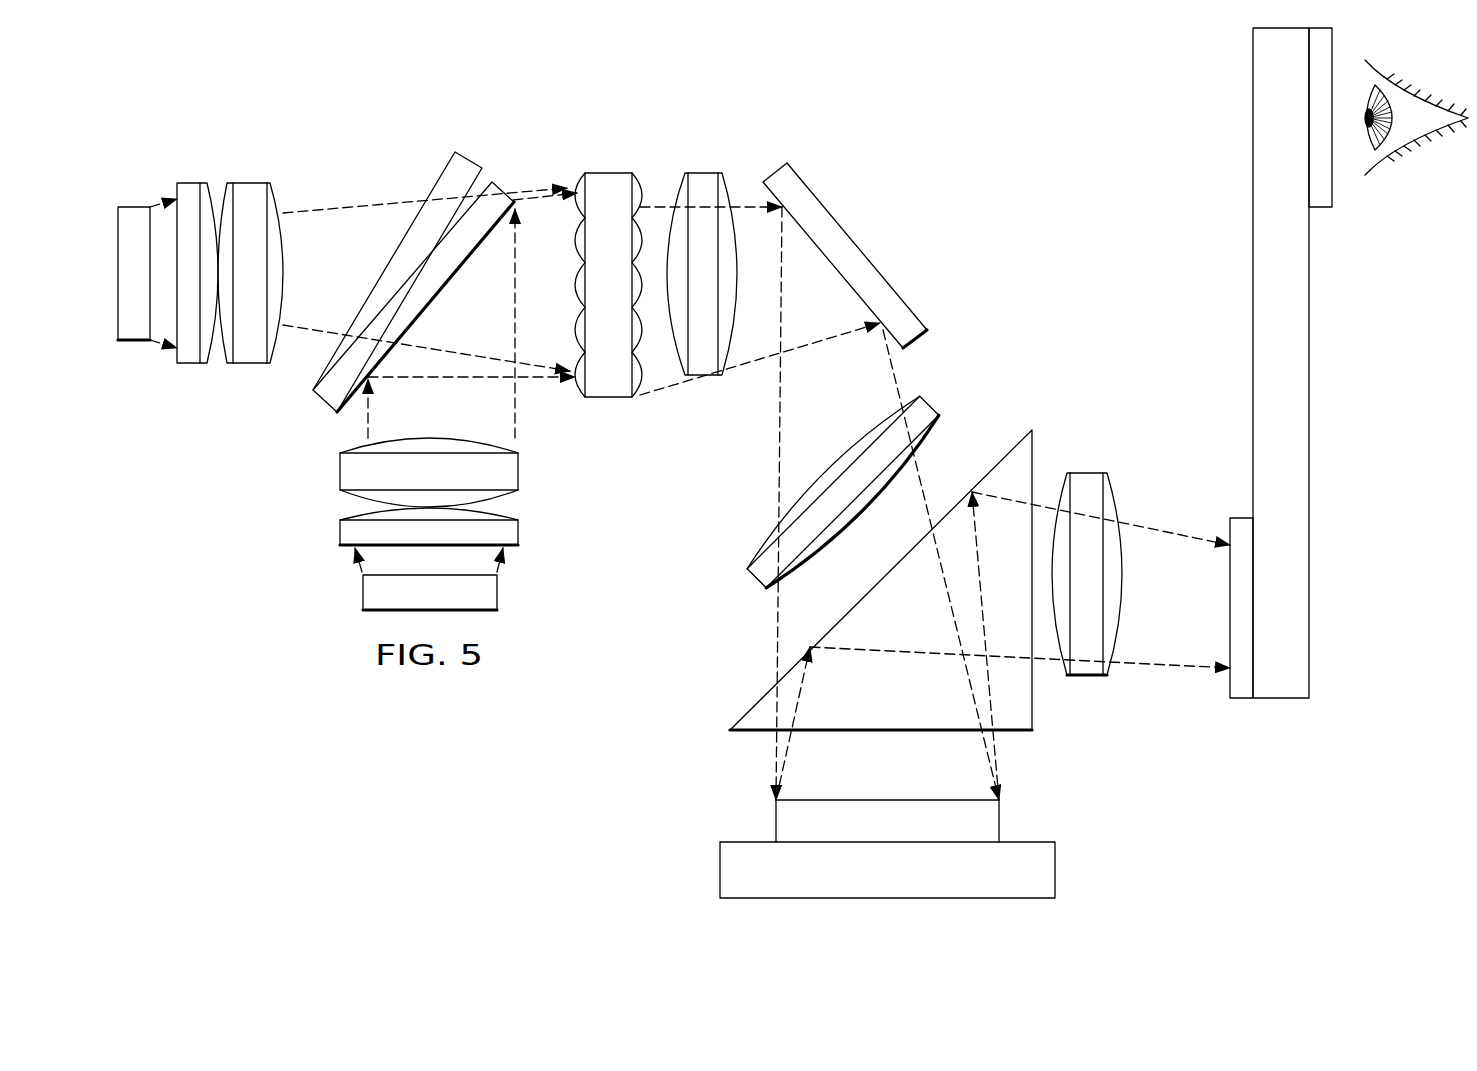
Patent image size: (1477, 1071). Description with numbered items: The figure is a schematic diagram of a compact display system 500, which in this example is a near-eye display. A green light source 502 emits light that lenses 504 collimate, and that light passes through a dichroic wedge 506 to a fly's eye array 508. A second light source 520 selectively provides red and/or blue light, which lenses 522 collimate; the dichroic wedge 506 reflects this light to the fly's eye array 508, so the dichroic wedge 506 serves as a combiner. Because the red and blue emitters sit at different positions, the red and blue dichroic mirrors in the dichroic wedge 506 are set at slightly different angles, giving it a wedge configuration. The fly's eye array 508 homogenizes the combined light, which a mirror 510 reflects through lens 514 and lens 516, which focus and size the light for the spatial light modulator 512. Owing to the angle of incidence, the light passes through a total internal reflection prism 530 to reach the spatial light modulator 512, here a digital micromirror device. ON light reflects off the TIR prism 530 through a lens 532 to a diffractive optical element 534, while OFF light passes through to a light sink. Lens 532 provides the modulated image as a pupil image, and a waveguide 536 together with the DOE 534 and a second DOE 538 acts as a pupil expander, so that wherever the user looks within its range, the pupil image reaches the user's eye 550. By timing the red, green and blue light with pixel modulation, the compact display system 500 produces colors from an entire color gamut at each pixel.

The compact display system 500 is at (349, 94).
The light source 502 is at (128, 207).
The lenses 504 is at (280, 162).
The dichroic wedge 506 is at (495, 144).
The fly's eye array 508 is at (608, 172).
The lens 514 is at (703, 173).
The mirror 510 is at (773, 170).
The lens 516 is at (927, 405).
The total internal reflection (TIR) prism 530 is at (750, 733).
The spatial light modulator 512 is at (1055, 870).
The lens 532 is at (1087, 676).
The diffractive optical element (DOE) 534 is at (1242, 688).
The waveguide 536 is at (1310, 363).
The DOE 538 is at (1333, 183).
The eye 550 is at (1423, 105).
The light source 520 is at (362, 592).
The lenses 522 is at (310, 438).